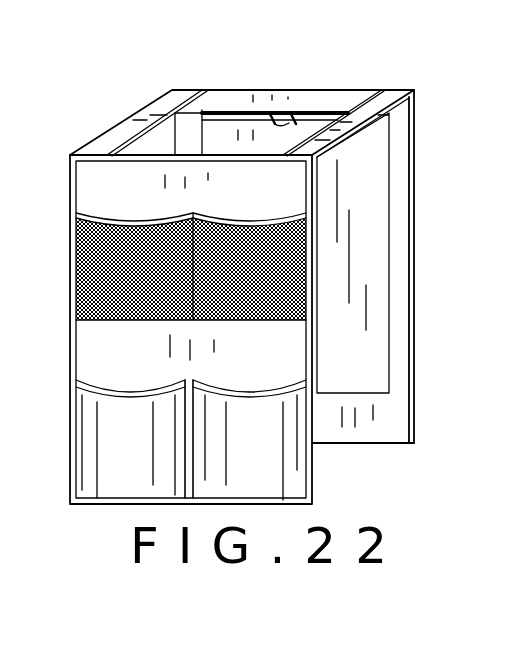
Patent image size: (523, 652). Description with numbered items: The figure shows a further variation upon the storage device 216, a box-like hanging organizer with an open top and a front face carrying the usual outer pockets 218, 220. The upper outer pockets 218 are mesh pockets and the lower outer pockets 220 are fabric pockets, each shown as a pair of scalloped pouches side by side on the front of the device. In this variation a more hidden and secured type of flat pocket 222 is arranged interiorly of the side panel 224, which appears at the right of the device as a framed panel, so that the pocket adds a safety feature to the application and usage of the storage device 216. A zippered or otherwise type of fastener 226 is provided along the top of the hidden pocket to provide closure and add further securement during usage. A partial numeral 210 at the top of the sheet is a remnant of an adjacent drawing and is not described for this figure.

The organizer (prior figure) 210 is at (0, 2).
The storage device 216 is at (297, 78).
The outer pocket 218 is at (186, 206).
The outer pocket 220 is at (177, 373).
The flat pocket 222 is at (370, 158).
The side panel 224 is at (355, 433).
The fastener 226 is at (277, 123).